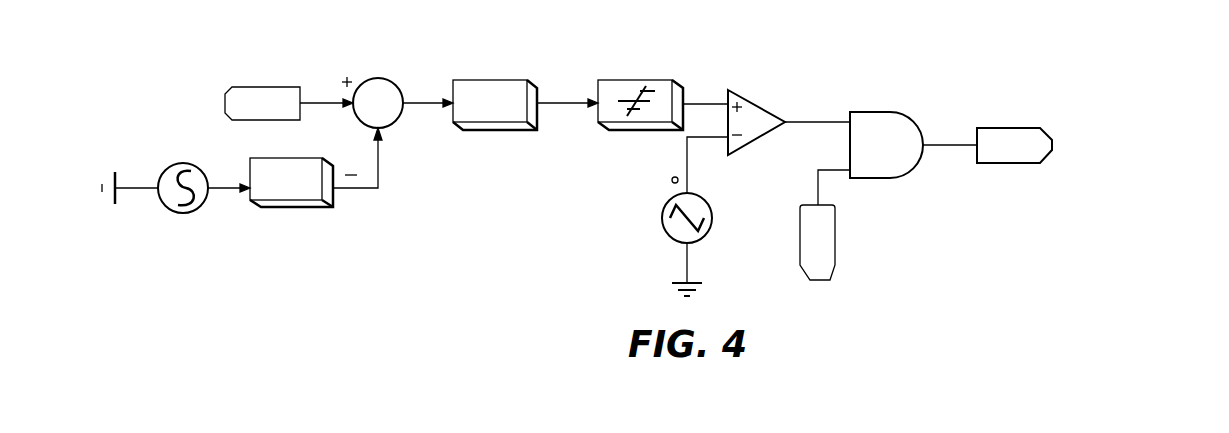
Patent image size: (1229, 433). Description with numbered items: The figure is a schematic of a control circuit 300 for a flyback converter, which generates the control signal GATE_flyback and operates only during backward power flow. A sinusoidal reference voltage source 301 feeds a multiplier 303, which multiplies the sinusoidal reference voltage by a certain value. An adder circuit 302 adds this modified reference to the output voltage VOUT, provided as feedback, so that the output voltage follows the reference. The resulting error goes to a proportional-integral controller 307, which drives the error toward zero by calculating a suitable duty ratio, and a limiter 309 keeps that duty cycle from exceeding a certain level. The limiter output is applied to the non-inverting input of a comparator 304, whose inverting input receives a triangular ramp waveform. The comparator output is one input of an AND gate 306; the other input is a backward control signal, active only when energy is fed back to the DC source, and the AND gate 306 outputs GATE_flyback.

The control circuit 300 is at (1117, 73).
The sinusoidal reference voltage source 301 is at (178, 163).
The adder circuit 302 is at (373, 76).
The multiplier 303 is at (268, 207).
The comparator 304 is at (752, 93).
The AND gate 306 is at (875, 111).
The proportional-integral (PI) controller 307 is at (483, 80).
The limiter 309 is at (615, 80).